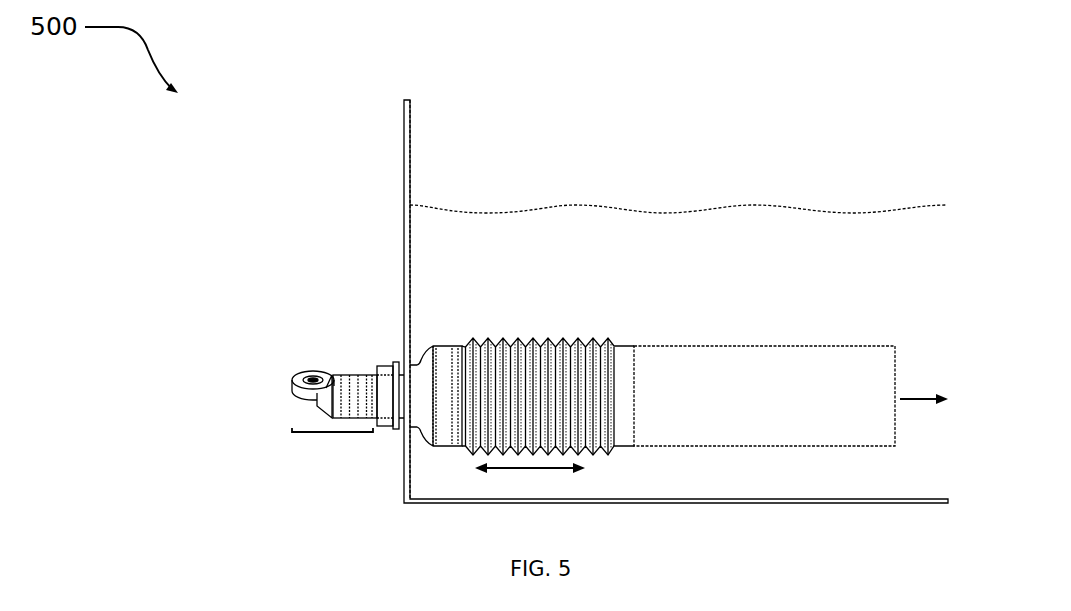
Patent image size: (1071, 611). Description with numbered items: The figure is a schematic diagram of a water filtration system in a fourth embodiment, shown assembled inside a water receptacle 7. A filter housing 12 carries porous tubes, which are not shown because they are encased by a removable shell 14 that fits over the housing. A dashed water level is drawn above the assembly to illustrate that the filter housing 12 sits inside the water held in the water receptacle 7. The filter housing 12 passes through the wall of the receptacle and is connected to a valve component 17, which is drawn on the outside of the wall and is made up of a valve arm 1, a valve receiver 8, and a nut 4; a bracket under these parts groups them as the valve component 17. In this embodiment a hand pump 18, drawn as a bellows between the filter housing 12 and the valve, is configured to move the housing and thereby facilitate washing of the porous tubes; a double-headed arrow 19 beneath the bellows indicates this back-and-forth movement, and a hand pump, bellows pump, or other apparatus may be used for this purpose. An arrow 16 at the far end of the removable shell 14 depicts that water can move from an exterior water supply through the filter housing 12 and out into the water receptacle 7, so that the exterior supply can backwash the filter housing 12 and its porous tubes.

The valve arm 1 is at (300, 367).
The valve receiver 8 is at (360, 371).
The nut 4 is at (385, 363).
The water receptacle 7 is at (404, 500).
The filter housing 12 is at (446, 333).
The hand pump 18 is at (534, 333).
The removable shell 14 is at (765, 343).
The arrow 16 is at (920, 405).
The direction of movement 19 is at (531, 472).
The valve component 17 is at (333, 434).